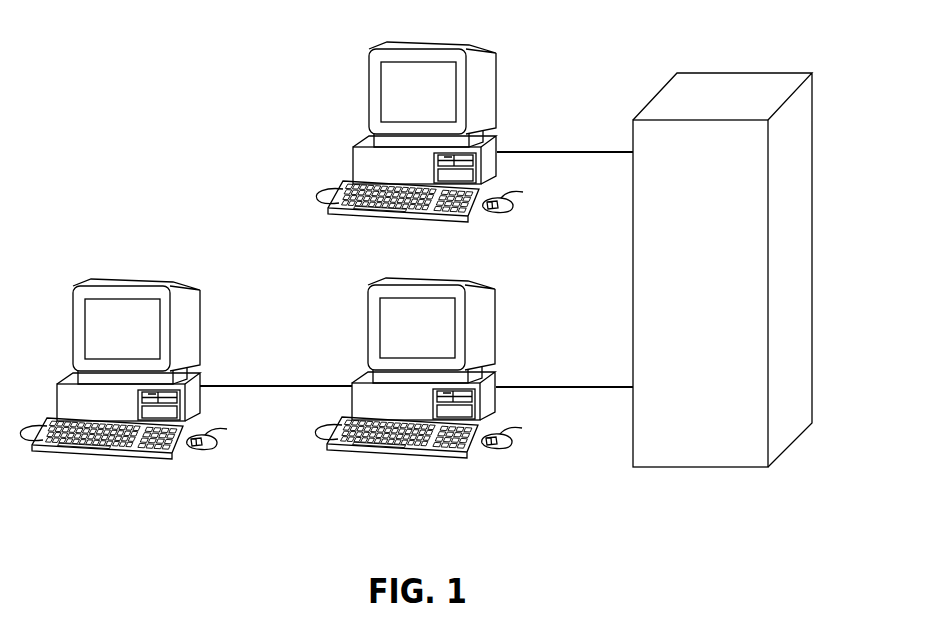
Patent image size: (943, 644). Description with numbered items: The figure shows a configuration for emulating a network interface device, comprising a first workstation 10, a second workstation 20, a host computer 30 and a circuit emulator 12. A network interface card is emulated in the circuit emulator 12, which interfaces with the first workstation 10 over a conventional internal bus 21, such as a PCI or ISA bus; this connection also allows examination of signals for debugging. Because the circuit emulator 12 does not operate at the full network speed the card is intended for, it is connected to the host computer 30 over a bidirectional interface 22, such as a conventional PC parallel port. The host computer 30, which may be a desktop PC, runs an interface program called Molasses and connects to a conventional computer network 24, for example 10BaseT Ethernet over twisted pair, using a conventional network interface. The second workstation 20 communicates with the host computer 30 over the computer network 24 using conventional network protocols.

The first workstation 10 is at (442, 48).
The circuit emulator 12 is at (718, 87).
The second workstation 20 is at (147, 284).
The internal bus 21 is at (578, 155).
The bidirectional interface 22 is at (593, 390).
The computer network 24 is at (317, 385).
The host computer 30 is at (496, 299).